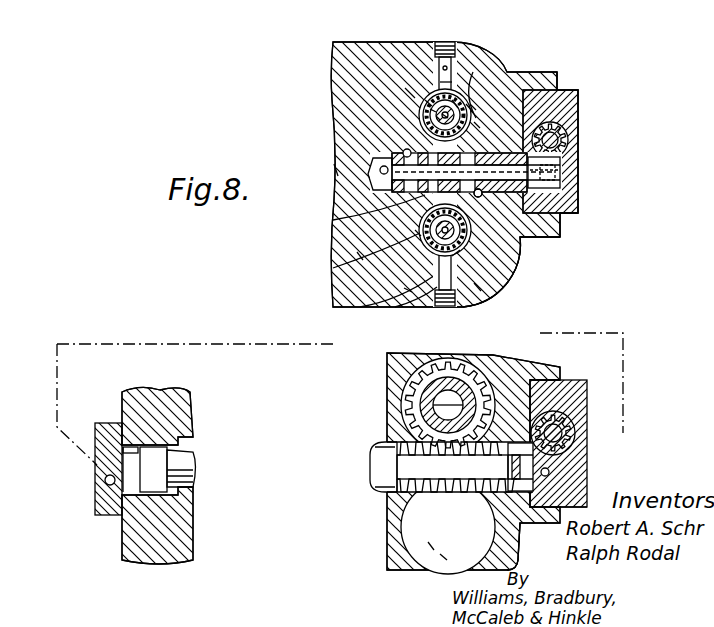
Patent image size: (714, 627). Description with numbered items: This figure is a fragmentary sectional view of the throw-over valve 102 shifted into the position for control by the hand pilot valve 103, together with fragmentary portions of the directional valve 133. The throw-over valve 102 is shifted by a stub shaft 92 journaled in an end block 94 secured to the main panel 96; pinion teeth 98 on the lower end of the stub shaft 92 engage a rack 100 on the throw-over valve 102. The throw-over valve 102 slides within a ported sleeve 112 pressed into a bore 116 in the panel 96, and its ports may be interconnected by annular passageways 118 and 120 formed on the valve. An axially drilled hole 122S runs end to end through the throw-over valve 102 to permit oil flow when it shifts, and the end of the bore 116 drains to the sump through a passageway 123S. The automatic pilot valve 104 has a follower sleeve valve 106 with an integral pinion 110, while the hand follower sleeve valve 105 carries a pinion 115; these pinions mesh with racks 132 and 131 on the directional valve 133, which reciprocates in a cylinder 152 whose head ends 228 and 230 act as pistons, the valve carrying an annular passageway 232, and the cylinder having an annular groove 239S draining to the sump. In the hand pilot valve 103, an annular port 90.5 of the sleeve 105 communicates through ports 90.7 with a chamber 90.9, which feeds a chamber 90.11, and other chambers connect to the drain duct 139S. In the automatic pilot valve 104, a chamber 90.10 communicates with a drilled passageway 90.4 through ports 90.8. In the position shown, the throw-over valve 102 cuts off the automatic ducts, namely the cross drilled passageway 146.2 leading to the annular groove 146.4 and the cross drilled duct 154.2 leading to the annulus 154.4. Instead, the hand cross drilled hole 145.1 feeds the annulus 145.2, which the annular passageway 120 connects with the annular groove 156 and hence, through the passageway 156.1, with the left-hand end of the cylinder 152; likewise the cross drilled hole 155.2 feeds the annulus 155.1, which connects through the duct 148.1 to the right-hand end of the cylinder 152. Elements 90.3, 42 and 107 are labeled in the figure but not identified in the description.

The ports 90.7 is at (410, 95).
The annular port 90.5 is at (423, 90).
The chamber 90.11 is at (446, 83).
The valve body passage 90.3 is at (455, 105).
The chamber 90.9 is at (470, 108).
The ports 90.8 is at (355, 298).
The chamber 90.10 is at (407, 290).
The drilled passageway 90.4 is at (477, 287).
The cover 42 is at (566, 84).
The bore 116 is at (580, 92).
The stub shaft 92 is at (566, 138).
The pinion teeth 98 is at (560, 148).
The rack 100 is at (556, 176).
The axially drilled hole 122S is at (562, 184).
The end block 94 is at (575, 212).
The ported sleeve 112 is at (563, 214).
The annular passageway 118 is at (558, 238).
The main panel 96 is at (520, 247).
The cross drilled passageway 146.2 is at (505, 190).
The cross drilled duct 154.2 is at (410, 279).
The annulus 155.1 is at (478, 262).
The automatic pilot valve 104 is at (435, 522).
The duct 148.1 is at (564, 341).
The hand follower sleeve valve 105 is at (425, 100).
The hand pilot valve 103 is at (430, 109).
The drain duct 139S is at (437, 118).
The cross drilled hole 145.1 is at (445, 117).
The cross drilled hole 155.2 is at (497, 97).
The annular groove 146.4 is at (501, 116).
The throw-over valve 102 is at (504, 155).
The passageway 123S is at (337, 170).
The annular passageway 145.2 is at (372, 176).
The annular passageway 120 is at (420, 214).
The annular groove 156 is at (418, 233).
The annular passageway 154.4 is at (360, 256).
The passageway 156.1 is at (257, 342).
The pinion 115 is at (500, 452).
The head end 228 is at (583, 384).
The gear 107 is at (417, 380).
The rack 131 is at (385, 447).
The directional valve 133 is at (385, 470).
The rack 132 is at (387, 497).
The pinion 110 is at (430, 546).
The follower sleeve valve 106 is at (443, 557).
The directional valve cylinder 152 is at (585, 470).
The annular groove 239S is at (197, 443).
The head end 230 is at (197, 460).
The annular passageway 232 is at (197, 490).